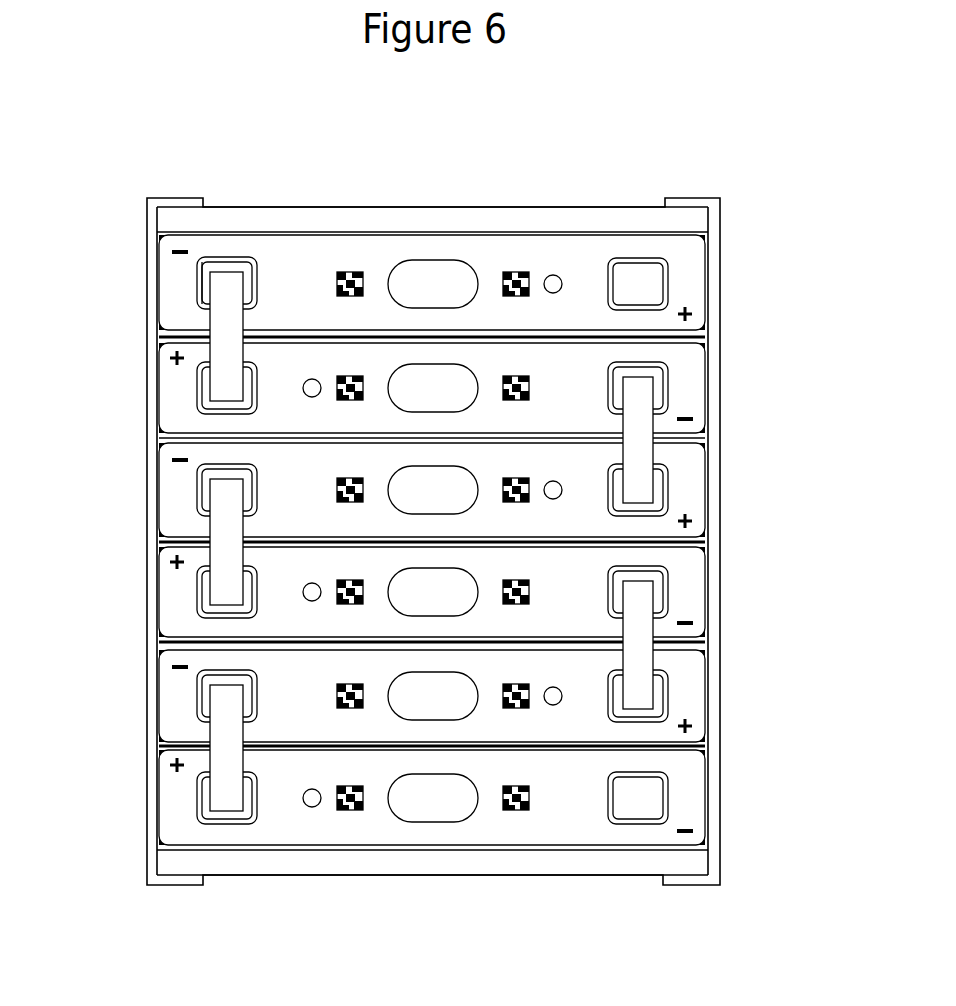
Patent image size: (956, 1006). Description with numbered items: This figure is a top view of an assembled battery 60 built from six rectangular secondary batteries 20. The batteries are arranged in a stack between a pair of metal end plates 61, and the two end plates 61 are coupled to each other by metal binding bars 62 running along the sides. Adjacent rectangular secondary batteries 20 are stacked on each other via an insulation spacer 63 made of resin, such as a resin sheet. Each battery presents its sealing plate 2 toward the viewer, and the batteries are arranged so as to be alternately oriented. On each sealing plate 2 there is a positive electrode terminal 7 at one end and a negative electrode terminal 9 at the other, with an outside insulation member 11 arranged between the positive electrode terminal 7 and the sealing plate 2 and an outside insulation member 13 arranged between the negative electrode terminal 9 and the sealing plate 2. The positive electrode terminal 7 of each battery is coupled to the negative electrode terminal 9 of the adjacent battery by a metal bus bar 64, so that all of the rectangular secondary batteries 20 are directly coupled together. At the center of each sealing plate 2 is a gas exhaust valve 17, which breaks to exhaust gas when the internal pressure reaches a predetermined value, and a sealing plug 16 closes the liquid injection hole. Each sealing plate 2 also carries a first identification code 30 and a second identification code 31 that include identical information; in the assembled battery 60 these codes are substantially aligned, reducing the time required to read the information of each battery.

The assembled battery 60 is at (143, 98).
The binding bar 62 is at (157, 580).
The end plate 61 is at (252, 222).
The insulation spacer 63 is at (707, 331).
The sealing plate 2 is at (305, 258).
The rectangular secondary battery 20 is at (692, 261).
The outside insulation member 13 is at (222, 262).
The positive electrode terminal 7 is at (205, 388).
The outside insulation member 11 is at (636, 262).
The negative electrode terminal 9 is at (205, 272).
The bus bar 64 is at (228, 327).
The gas exhaust valve 17 is at (430, 283).
The second identification code 31 is at (345, 258).
The first identification code 30 is at (515, 268).
The sealing plug 16 is at (560, 278).